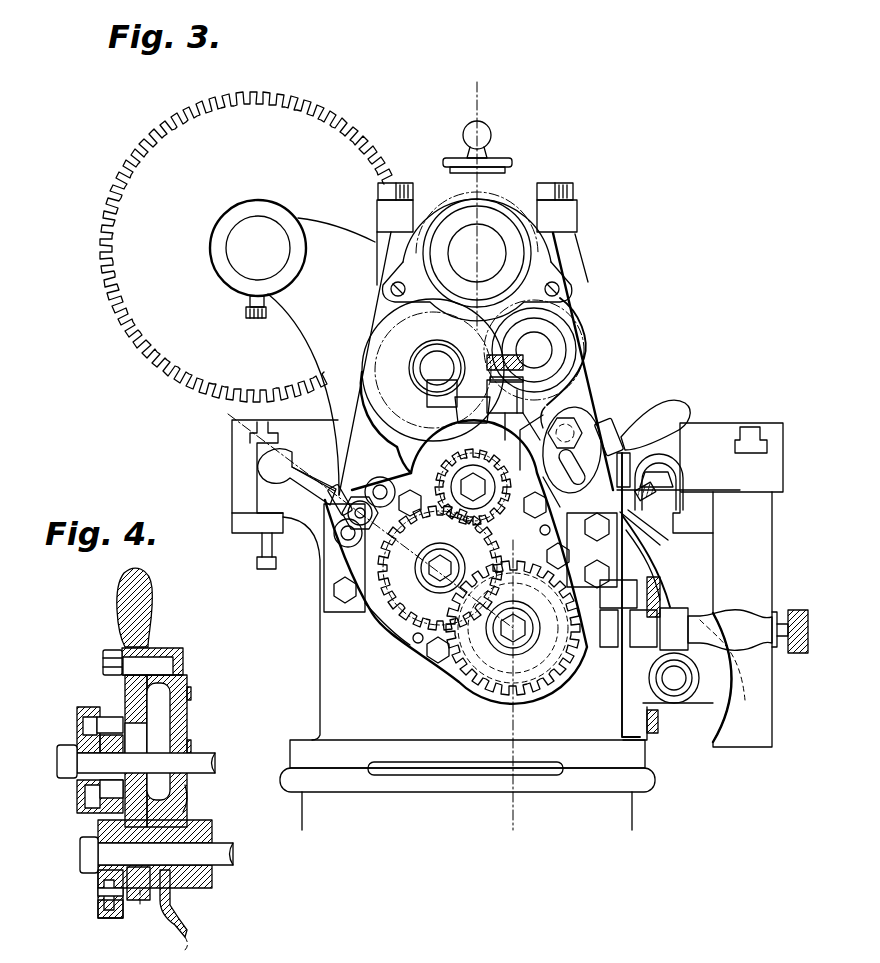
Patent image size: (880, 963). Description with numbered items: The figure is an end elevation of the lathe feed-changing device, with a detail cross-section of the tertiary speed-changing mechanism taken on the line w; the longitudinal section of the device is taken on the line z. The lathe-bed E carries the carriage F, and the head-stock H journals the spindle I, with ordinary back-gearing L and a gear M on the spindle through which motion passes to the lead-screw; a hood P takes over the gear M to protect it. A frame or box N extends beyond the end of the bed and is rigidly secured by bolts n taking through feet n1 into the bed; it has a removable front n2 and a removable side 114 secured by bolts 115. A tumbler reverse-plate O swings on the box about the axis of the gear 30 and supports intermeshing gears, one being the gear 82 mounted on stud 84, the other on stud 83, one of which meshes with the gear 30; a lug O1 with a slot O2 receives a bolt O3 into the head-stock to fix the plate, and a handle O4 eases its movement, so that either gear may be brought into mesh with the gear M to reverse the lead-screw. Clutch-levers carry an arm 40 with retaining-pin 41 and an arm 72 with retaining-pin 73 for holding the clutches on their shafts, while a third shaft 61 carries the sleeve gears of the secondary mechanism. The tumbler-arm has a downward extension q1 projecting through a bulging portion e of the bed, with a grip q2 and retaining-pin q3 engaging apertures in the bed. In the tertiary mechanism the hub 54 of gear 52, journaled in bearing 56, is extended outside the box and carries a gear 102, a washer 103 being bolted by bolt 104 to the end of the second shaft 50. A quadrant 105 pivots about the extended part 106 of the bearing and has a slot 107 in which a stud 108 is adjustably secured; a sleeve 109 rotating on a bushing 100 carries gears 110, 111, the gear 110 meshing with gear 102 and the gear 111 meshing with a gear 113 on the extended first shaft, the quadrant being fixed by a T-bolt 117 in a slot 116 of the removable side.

In FIG. 3, the back-gearing L is at (138, 188).
In FIG. 3, the gear on the spindle M is at (505, 202).
In FIG. 3, the spindle I is at (477, 253).
In FIG. 3, the hood P is at (568, 273).
In FIG. 3, the gear 82 is at (392, 345).
In FIG. 3, the stud 84 is at (433, 355).
In FIG. 3, the stud 83 is at (520, 350).
In FIG. 3, the tumbler reverse-plate O is at (580, 340).
In FIG. 3, the third shaft 61 is at (560, 327).
In FIG. 4, the third shaft 61 is at (218, 752).
In FIG. 3, the head-stock H is at (590, 388).
In FIG. 3, the arm 40 is at (475, 383).
In FIG. 3, the retaining-pin 41 is at (514, 418).
In FIG. 3, the lug O1 is at (600, 425).
In FIG. 3, the slot O2 is at (580, 472).
In FIG. 3, the bolt O3 is at (571, 444).
In FIG. 3, the handle O4 is at (656, 410).
In FIG. 3, the removable front n2 is at (544, 461).
In FIG. 3, the carriage F is at (722, 437).
In FIG. 3, the bulging portion of the bed e is at (655, 540).
In FIG. 3, the downward extension q1 is at (665, 560).
In FIG. 3, the grip q2 is at (733, 615).
In FIG. 3, the retaining-pin q3 is at (796, 608).
In FIG. 3, the section line w is at (458, 573).
In FIG. 3, the retaining-pin 73 is at (618, 613).
In FIG. 3, the arm 72 is at (620, 628).
In FIG. 3, the frame or box N is at (398, 647).
In FIG. 4, the frame or box N is at (190, 708).
In FIG. 3, the gear 113 is at (478, 465).
In FIG. 3, the gear 110 is at (430, 558).
In FIG. 4, the gear 110 is at (113, 733).
In FIG. 3, the gear 102 is at (537, 665).
In FIG. 4, the gear 102 is at (100, 905).
In FIG. 3, the washer 103 is at (490, 690).
In FIG. 4, the washer 103 is at (95, 872).
In FIG. 3, the bolt 104 is at (465, 680).
In FIG. 4, the bolt 104 is at (80, 858).
In FIG. 3, the gear 30 is at (481, 584).
In FIG. 3, the slot 107 is at (459, 525).
In FIG. 4, the slot 107 is at (190, 805).
In FIG. 3, the quadrant 105 is at (445, 622).
In FIG. 4, the quadrant 105 is at (128, 695).
In FIG. 3, the bolts 115 is at (424, 677).
In FIG. 3, the bolts n is at (347, 614).
In FIG. 3, the gear 111 is at (378, 623).
In FIG. 4, the gear 111 is at (80, 712).
In FIG. 3, the feet n1 is at (328, 574).
In FIG. 3, the lathe-bed or shears E is at (318, 653).
In FIG. 3, the slot 116 is at (380, 483).
In FIG. 4, the slot 116 is at (160, 622).
In FIG. 3, the T-bolt 117 is at (322, 530).
In FIG. 4, the T-bolt 117 is at (165, 650).
In FIG. 3, the section line z is at (502, 448).
In FIG. 4, the bushing 100 is at (78, 740).
In FIG. 4, the stud 108 is at (78, 785).
In FIG. 4, the sleeve 109 is at (80, 800).
In FIG. 4, the gear 52 is at (214, 885).
In FIG. 4, the second shaft 50 is at (234, 858).
In FIG. 4, the hub 54 is at (150, 895).
In FIG. 4, the bearing 56 is at (185, 900).
In FIG. 4, the extended part of the bearing 106 is at (145, 915).
In FIG. 4, the removable side 114 is at (180, 940).